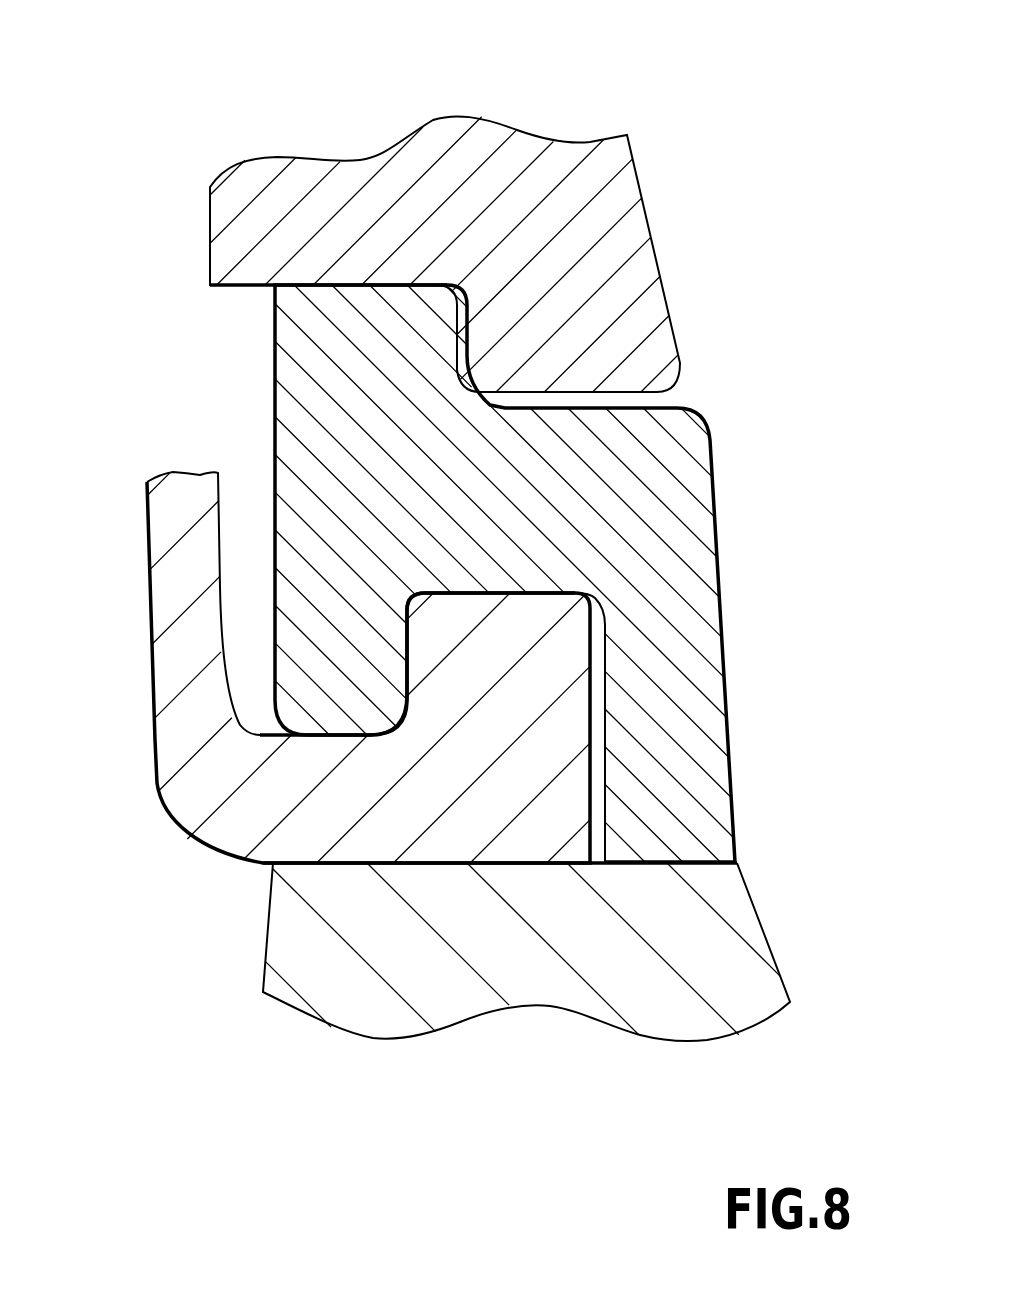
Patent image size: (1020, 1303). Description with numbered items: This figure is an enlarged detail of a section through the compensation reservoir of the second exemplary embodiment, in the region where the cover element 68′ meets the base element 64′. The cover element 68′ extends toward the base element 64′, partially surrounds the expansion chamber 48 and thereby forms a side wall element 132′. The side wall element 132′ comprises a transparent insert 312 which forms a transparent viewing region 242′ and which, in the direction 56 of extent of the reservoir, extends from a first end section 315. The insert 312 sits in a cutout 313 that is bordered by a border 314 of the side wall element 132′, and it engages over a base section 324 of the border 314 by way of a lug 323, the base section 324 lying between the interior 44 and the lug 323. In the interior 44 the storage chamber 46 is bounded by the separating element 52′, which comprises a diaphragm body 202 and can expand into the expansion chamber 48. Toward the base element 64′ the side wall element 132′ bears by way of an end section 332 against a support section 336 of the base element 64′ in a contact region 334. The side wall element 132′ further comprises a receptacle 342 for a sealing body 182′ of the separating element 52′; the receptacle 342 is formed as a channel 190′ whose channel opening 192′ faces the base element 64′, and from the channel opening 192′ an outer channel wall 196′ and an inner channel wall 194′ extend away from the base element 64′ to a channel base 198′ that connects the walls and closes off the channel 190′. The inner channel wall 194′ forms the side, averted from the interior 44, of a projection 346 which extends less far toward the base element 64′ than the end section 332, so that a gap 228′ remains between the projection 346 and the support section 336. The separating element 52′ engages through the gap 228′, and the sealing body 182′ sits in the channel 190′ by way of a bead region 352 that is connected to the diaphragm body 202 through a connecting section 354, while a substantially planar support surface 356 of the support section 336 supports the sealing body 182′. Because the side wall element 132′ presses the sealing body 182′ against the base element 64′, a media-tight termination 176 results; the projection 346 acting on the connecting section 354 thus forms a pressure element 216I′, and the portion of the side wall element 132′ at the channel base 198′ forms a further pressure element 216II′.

The transparent viewing region 242′ is at (636, 145).
The cover element 68′ is at (298, 350).
The separating element 52′ is at (185, 737).
The media-tight termination 176 is at (252, 873).
The base section 324 is at (328, 300).
The transparent insert 312 is at (371, 200).
The border 314 is at (417, 340).
The first end section 315 is at (557, 323).
The direction of extent 56 is at (742, 250).
The expansion chamber 48 is at (154, 283).
The interior 44 is at (137, 376).
The projection 346 is at (317, 707).
The pressure element 216I′ is at (290, 707).
The inner channel wall 194′ is at (412, 602).
The diaphragm body 202 is at (180, 527).
The gap 228′ is at (268, 725).
The storage chamber 46 is at (102, 835).
The sealing body 182′ is at (263, 863).
The lug 323 is at (650, 350).
The cutout 313 is at (637, 402).
The further pressure element 216II′ is at (480, 593).
The receptacle 342 is at (521, 576).
The channel base 198′ is at (490, 597).
The channel 190′ is at (600, 618).
The side wall element 132′ is at (700, 660).
The outer channel wall 196′ is at (603, 703).
The channel opening 192′ is at (603, 765).
The end section 332 is at (710, 823).
The contact region 334 is at (715, 848).
The connecting section 354 is at (347, 837).
The support surface 356 is at (413, 860).
The bead region 352 is at (503, 703).
The support section 336 is at (550, 860).
The base element 64′ is at (682, 993).